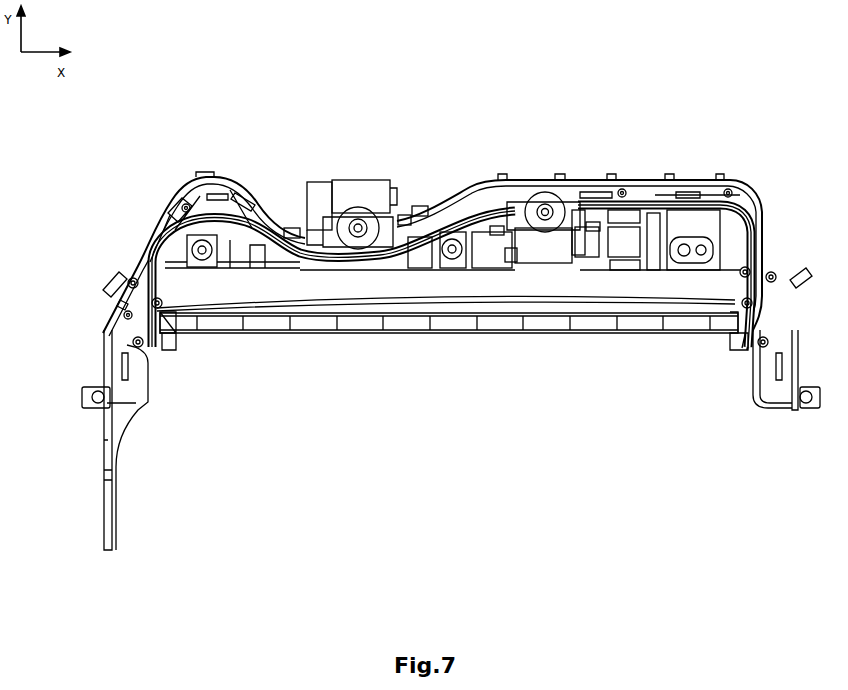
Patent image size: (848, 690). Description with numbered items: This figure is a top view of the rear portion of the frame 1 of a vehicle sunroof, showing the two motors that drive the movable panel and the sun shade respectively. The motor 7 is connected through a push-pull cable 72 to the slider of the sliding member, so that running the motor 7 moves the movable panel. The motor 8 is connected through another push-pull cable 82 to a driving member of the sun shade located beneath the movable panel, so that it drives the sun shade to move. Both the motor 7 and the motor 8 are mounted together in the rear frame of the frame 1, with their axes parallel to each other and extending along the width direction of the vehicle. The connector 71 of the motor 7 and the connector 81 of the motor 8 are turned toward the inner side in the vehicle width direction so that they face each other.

The frame 1 is at (113, 417).
The motor 7 is at (365, 200).
The connector 71 is at (399, 219).
The push-pull cable 72 is at (297, 232).
The motor 8 is at (558, 243).
The connector 81 is at (510, 255).
The push-pull cable 82 is at (497, 233).